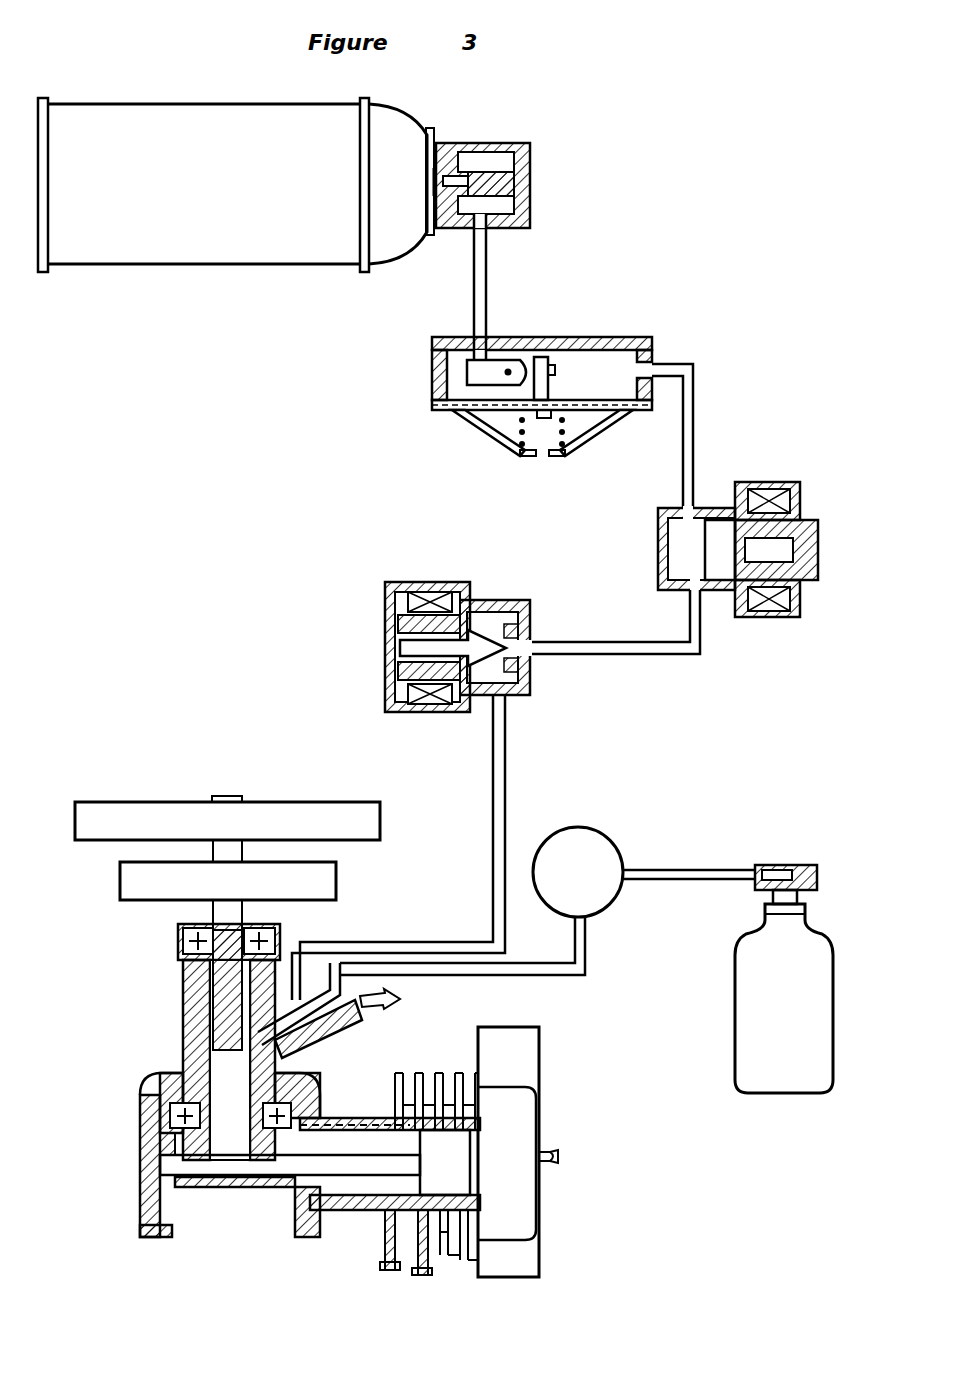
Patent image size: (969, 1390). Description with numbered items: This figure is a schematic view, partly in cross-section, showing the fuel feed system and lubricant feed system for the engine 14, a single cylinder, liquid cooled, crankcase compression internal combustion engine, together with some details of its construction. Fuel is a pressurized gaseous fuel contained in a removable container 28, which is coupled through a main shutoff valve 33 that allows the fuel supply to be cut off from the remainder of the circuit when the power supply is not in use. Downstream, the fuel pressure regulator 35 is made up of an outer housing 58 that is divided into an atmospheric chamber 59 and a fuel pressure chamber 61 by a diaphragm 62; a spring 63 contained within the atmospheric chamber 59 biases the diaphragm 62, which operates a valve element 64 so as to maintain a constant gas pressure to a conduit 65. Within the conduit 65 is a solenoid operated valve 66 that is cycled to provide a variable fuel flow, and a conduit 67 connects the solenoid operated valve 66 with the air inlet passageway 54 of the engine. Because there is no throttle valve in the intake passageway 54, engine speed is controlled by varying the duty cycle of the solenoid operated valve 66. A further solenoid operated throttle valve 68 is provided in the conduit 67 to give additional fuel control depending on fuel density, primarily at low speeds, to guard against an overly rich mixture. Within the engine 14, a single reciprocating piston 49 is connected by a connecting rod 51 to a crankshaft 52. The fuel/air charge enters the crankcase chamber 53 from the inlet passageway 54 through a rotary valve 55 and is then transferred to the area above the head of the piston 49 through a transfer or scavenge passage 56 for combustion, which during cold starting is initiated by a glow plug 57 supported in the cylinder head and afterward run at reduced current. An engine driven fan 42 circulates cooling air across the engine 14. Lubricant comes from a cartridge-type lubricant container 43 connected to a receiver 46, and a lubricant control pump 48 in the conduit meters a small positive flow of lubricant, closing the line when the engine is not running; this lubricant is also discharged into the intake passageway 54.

The internal combustion engine 14 is at (512, 1300).
The removable container 28 is at (231, 272).
The main shutoff valve 33 is at (532, 184).
The fuel pressure regulator 35 is at (525, 389).
The engine driven fan 42 is at (380, 820).
The lubricant container 43 is at (735, 1012).
The receiver 46 is at (790, 862).
The lubricant control pump 48 is at (618, 852).
The piston 49 is at (430, 1198).
The connecting rod 51 is at (305, 1235).
The crankshaft 52 is at (150, 1175).
The crankcase chamber 53 is at (180, 1170).
The air inlet passageway 54 is at (336, 1040).
The rotary valve 55 is at (195, 1033).
The transfer or scavenge passage 56 is at (332, 1110).
The glow plug 57 is at (562, 1157).
The outer housing 58 is at (435, 368).
The atmospheric chamber 59 is at (580, 425).
The fuel pressure chamber 61 is at (580, 364).
The diaphragm 62 is at (470, 425).
The spring 63 is at (505, 440).
The valve element 64 is at (456, 342).
The conduit 65 is at (700, 430).
The solenoid operated valve 66 is at (818, 522).
The conduit 67 is at (505, 797).
The throttle valve 68 is at (386, 648).